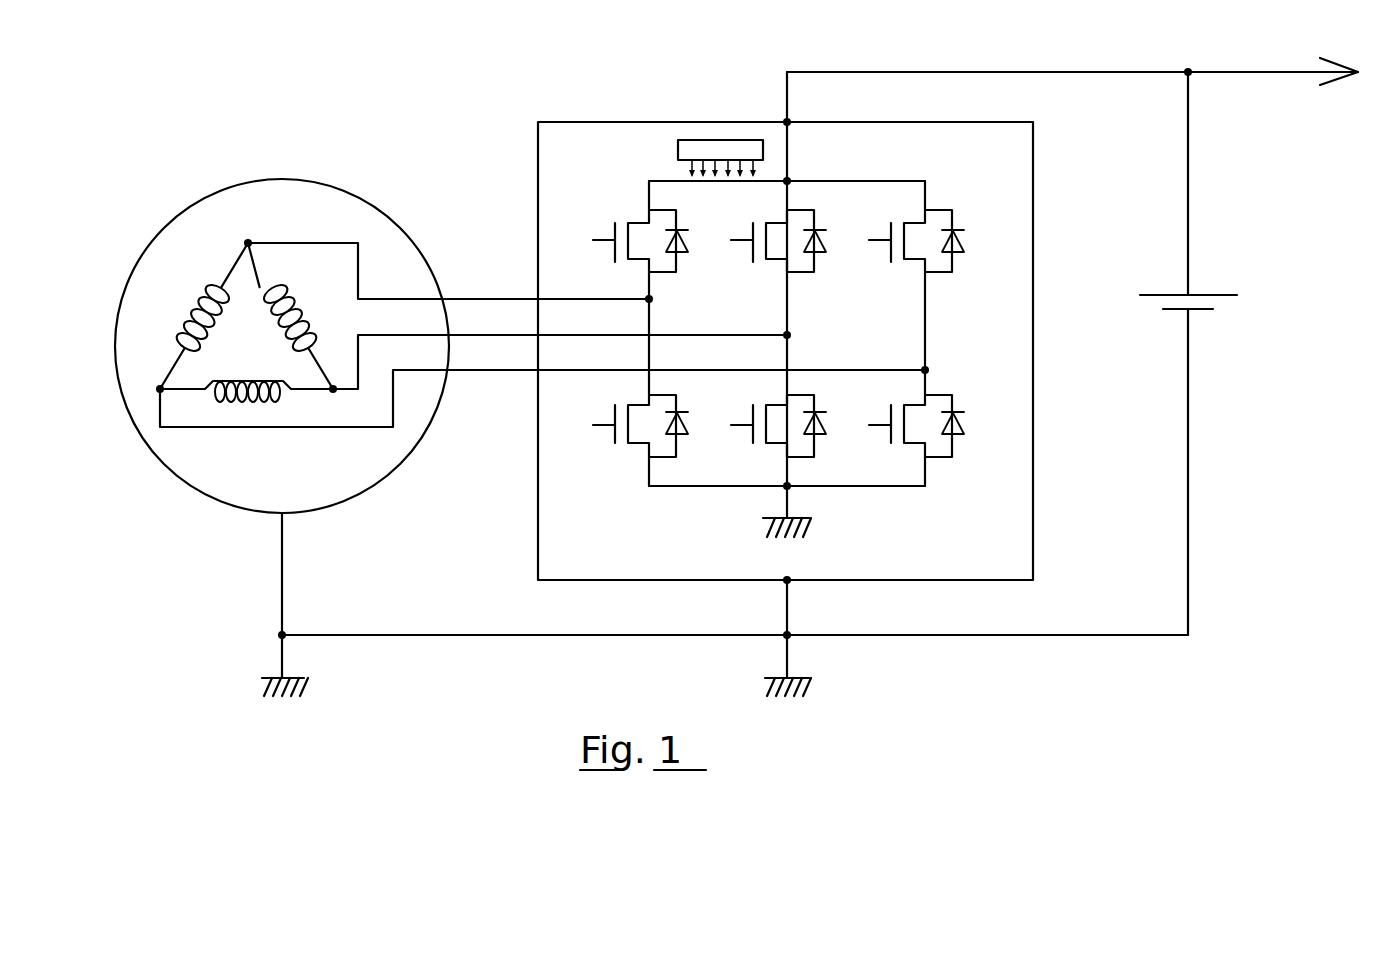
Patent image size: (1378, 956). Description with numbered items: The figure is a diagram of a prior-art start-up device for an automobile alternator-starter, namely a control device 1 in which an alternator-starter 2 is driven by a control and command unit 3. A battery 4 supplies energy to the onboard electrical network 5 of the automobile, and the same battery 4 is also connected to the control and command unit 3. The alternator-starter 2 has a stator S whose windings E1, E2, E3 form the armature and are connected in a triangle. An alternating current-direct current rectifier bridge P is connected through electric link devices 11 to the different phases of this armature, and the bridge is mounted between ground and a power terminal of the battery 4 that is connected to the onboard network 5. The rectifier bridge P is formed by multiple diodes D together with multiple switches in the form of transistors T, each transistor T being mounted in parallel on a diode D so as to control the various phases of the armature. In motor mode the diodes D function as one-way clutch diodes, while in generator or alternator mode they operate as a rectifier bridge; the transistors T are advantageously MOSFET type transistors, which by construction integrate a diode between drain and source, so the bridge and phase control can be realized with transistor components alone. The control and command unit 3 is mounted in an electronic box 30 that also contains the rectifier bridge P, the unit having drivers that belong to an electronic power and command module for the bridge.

The control device 1 is at (490, 127).
The alternator-starter 2 is at (130, 266).
The control and command unit 3 is at (722, 140).
The battery 4 is at (1217, 278).
The onboard electrical network 5 is at (1215, 70).
The electric link devices 11 is at (485, 384).
The electronic box 30 is at (878, 606).
The stator S is at (152, 330).
The winding E1 is at (212, 283).
The winding E2 is at (287, 283).
The winding E3 is at (247, 400).
The transistor T is at (623, 220).
The diode D is at (688, 242).
The rectifier bridge P is at (892, 513).